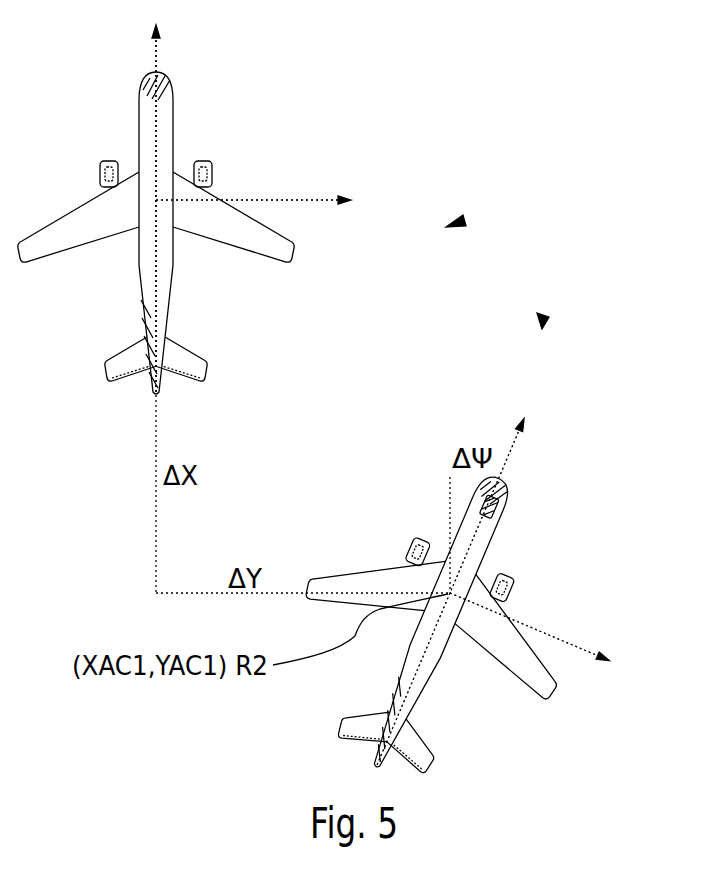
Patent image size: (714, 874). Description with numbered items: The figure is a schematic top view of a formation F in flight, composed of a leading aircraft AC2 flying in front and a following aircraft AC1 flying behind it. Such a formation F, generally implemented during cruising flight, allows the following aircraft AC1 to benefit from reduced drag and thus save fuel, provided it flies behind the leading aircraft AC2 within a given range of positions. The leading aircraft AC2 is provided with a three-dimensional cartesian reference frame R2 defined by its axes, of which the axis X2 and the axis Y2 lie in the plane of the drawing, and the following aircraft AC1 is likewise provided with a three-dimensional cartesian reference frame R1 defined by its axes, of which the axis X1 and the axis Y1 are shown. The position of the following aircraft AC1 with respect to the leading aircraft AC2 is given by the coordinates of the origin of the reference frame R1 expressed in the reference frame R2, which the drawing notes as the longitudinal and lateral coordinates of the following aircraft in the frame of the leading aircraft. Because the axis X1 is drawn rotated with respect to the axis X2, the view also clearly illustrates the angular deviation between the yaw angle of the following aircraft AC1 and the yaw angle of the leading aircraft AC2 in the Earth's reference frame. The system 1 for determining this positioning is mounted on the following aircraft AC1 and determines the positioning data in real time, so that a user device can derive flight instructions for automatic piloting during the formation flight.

The leading aircraft AC2 is at (173, 277).
The axis X2 of reference frame R2 X2 is at (157, 58).
The axis Y2 of reference frame R2 Y2 is at (315, 198).
The reference frame of the leading aircraft R2 is at (158, 150).
The following aircraft AC1 is at (566, 652).
The axis X1 of reference frame R1 X1 is at (518, 440).
The axis Y1 of reference frame R1 Y1 is at (573, 646).
The reference frame of the following aircraft R1 is at (467, 557).
The system 1 is at (508, 506).
The formation F is at (465, 219).